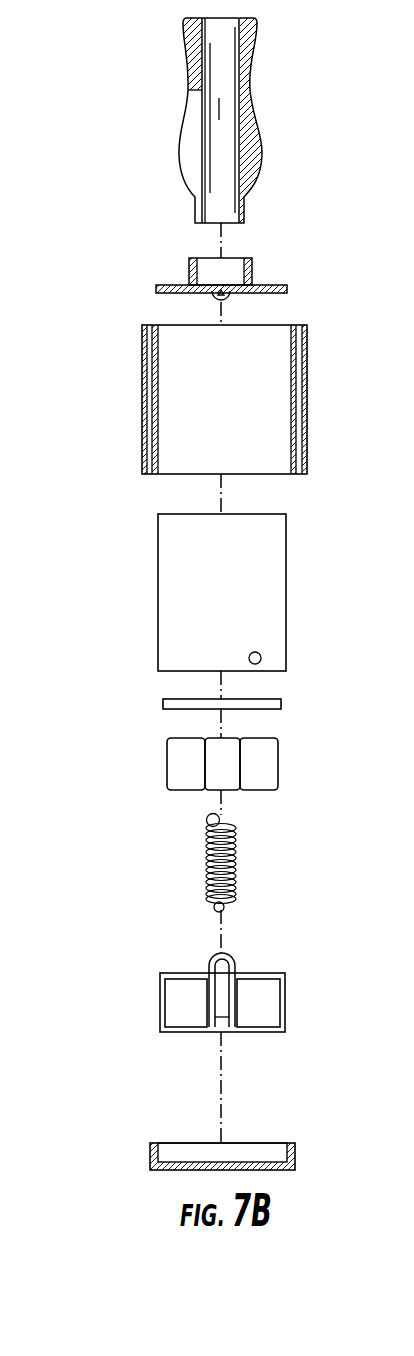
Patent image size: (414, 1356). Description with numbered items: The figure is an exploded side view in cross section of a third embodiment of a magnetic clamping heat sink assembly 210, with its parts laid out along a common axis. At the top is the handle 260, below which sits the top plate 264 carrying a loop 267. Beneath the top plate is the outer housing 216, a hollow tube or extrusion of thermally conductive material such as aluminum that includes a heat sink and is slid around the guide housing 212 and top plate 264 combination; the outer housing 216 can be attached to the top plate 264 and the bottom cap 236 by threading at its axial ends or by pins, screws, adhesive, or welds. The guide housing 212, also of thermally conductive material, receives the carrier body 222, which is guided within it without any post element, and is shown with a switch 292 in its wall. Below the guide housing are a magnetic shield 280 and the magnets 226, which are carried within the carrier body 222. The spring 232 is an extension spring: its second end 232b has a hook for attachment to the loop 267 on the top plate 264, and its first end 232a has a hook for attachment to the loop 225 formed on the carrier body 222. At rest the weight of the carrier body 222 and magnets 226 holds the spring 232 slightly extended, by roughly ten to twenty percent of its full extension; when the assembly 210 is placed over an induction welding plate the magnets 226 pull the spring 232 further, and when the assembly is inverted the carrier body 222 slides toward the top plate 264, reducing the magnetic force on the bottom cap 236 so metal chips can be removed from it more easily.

The magnetic clamping heat sink assembly 210 is at (116, 223).
The handle 260 is at (262, 134).
The top plate 264 is at (176, 285).
The loop 267 is at (233, 296).
The outer housing 216 is at (163, 420).
The guide housing 212 is at (276, 580).
The switch 292 is at (262, 658).
The magnetic shield 280 is at (168, 706).
The magnets 226 is at (266, 762).
The spring 232 is at (238, 869).
The second end of the spring 232b is at (222, 820).
The first end of the spring 232a is at (214, 909).
The carrier body 222 is at (286, 992).
The loop 225 is at (214, 962).
The bottom cap 236 is at (148, 1155).